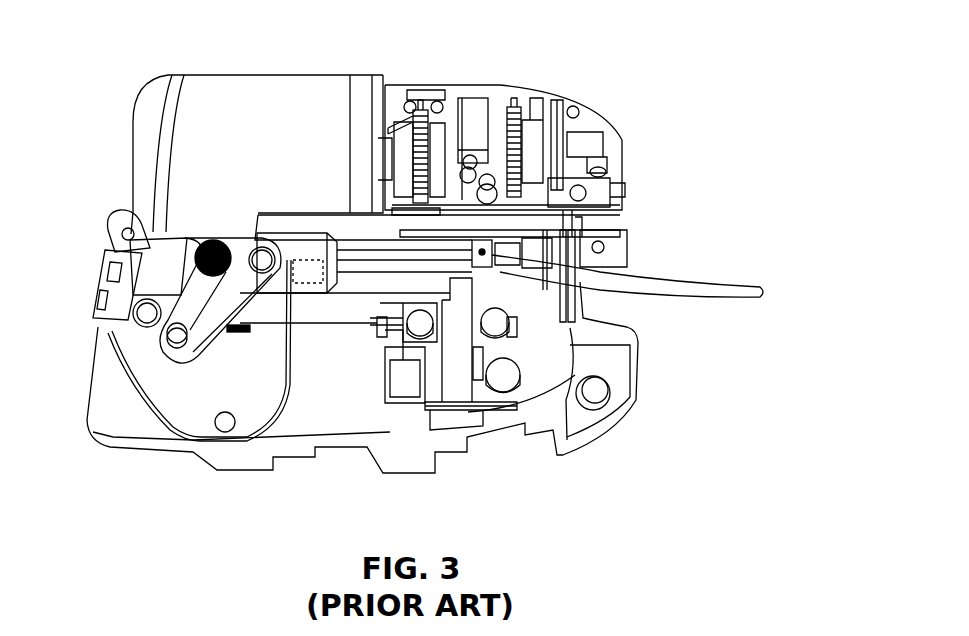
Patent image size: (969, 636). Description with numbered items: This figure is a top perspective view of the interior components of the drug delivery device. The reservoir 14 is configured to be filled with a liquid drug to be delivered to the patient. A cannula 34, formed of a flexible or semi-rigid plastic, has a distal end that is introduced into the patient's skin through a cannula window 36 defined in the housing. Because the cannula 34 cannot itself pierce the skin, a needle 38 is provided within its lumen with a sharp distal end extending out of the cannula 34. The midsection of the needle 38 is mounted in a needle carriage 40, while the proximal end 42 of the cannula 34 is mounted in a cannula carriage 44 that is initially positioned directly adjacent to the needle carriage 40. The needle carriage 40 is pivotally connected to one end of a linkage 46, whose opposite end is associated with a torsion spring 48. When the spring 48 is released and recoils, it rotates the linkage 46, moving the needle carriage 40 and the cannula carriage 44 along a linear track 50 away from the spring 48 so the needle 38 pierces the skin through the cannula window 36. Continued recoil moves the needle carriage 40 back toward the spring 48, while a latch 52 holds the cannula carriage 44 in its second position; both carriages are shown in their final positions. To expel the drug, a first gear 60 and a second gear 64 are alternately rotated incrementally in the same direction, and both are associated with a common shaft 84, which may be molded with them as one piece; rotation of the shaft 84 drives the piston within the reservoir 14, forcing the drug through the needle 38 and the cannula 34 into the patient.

The reservoir 14 is at (223, 108).
The cannula 34 is at (723, 283).
The cannula window 36 is at (615, 320).
The needle 38 is at (278, 408).
The needle carriage 40 is at (298, 245).
The proximal end 42 is at (483, 255).
The cannula carriage 44 is at (495, 240).
The linkage 46 is at (185, 292).
The torsion spring 48 is at (205, 240).
The linear track 50 is at (430, 290).
The latch 52 is at (455, 378).
The first gear 60 is at (420, 115).
The second gear 64 is at (513, 117).
The shaft 84 is at (482, 147).